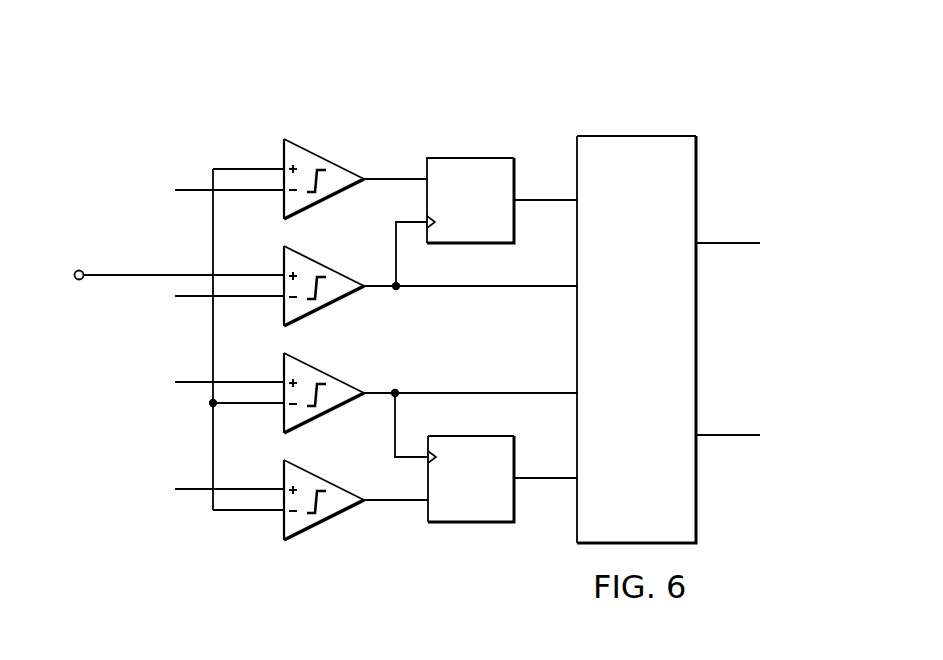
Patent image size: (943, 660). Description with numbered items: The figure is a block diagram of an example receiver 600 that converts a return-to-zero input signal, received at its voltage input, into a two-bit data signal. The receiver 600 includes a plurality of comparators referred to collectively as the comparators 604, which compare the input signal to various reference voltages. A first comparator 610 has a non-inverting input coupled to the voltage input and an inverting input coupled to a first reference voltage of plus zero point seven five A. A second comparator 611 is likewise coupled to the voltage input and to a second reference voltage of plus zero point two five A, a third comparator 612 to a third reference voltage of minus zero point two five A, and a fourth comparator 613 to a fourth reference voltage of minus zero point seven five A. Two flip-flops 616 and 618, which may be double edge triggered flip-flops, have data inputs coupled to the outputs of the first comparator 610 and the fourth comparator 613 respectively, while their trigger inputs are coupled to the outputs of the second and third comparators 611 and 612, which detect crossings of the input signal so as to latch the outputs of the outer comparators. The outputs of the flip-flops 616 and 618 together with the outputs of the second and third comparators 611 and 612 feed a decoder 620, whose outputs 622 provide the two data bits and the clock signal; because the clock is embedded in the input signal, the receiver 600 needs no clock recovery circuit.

The receiver 600 is at (315, 72).
The comparators 604 is at (380, 100).
The first comparator 610 is at (325, 157).
The second comparator 611 is at (347, 248).
The third comparator 612 is at (325, 413).
The fourth comparator 613 is at (325, 520).
The flip-flop 616 is at (470, 158).
The flip-flop 618 is at (470, 522).
The decoder 620 is at (657, 380).
The outputs 622 is at (792, 200).